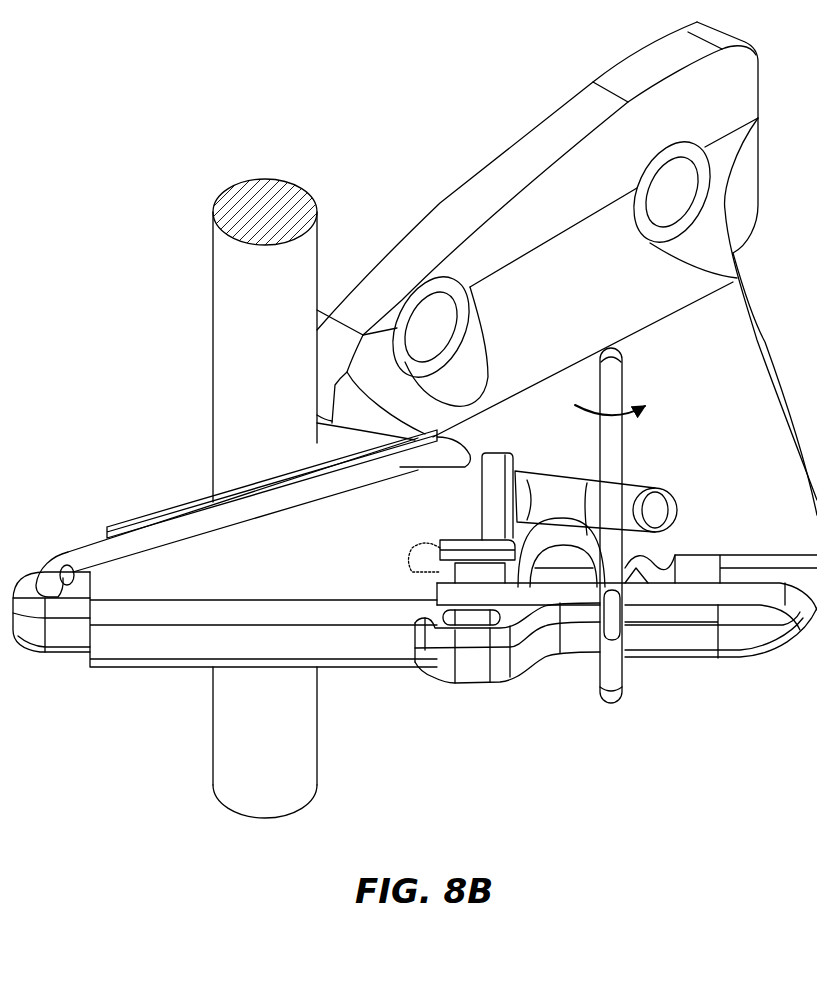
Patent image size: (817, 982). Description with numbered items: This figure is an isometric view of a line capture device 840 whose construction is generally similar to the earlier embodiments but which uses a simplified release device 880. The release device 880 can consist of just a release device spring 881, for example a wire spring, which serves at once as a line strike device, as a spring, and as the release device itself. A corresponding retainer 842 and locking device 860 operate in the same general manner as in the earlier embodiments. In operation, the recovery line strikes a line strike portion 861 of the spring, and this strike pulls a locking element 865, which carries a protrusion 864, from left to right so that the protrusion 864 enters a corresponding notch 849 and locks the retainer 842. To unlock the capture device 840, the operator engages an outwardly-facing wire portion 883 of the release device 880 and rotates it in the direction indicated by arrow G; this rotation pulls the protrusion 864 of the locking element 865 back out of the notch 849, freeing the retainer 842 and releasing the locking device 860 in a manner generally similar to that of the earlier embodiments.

The line capture device 840 is at (411, 135).
The retainer 842 is at (373, 652).
The notch 849 is at (463, 540).
The locking device 860 is at (563, 530).
The line strike portion 861 is at (590, 507).
The protrusion 864 is at (407, 552).
The locking element 865 is at (460, 574).
The release device 880 is at (680, 497).
The release device spring 881 is at (622, 368).
The outwardly-facing wire portion 883 is at (600, 672).
The arrow G is at (578, 410).